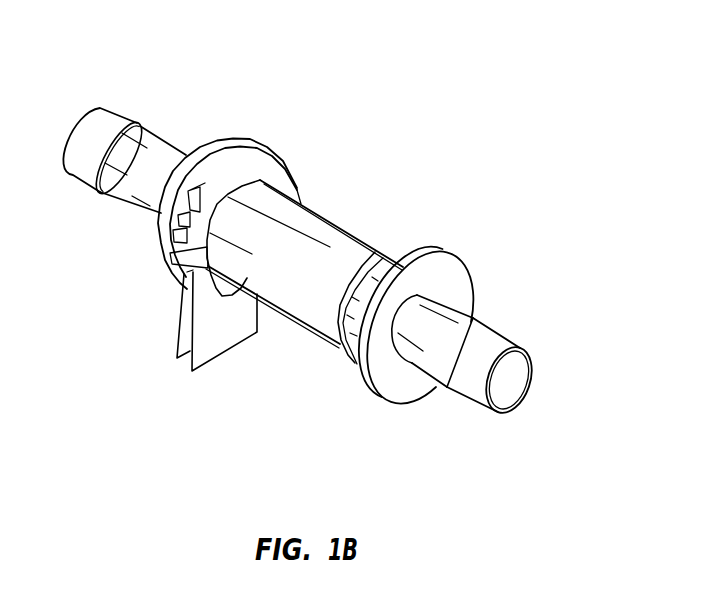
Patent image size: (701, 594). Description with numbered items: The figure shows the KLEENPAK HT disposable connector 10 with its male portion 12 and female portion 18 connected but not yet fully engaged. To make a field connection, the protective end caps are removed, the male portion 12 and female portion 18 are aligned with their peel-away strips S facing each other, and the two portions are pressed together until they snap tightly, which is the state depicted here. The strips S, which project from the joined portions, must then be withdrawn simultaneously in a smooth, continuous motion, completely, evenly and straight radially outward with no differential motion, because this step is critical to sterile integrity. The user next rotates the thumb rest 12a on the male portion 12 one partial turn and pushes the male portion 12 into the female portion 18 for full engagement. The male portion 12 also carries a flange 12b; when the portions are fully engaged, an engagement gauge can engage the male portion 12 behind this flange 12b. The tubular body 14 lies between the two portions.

The disposable connector 10 is at (437, 150).
The male portion 12 is at (450, 318).
The thumb rest 12a is at (404, 318).
The flange 12b is at (440, 272).
The tubular body 14 is at (328, 232).
The female portion 18 is at (152, 147).
The peel-away strips S is at (207, 347).